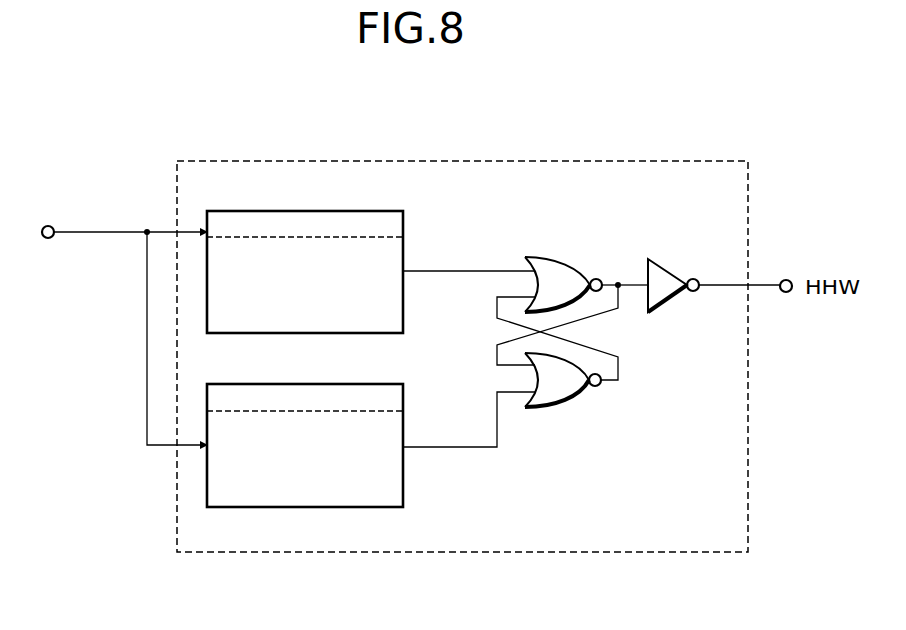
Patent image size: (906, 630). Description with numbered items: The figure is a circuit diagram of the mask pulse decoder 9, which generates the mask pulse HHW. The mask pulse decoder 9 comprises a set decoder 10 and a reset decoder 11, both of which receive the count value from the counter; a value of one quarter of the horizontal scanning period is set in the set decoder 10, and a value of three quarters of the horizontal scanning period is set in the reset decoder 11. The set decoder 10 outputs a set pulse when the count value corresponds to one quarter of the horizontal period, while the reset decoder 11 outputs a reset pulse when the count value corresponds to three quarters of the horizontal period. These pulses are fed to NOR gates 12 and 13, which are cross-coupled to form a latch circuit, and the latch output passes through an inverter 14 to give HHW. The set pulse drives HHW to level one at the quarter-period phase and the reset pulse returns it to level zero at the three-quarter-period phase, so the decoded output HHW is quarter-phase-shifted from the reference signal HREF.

The mask pulse decoder 9 is at (465, 161).
The set decoder 10 is at (403, 222).
The reset decoder 11 is at (403, 480).
The NOR gate 12 is at (551, 257).
The NOR gate 13 is at (553, 407).
The inverter 14 is at (662, 259).